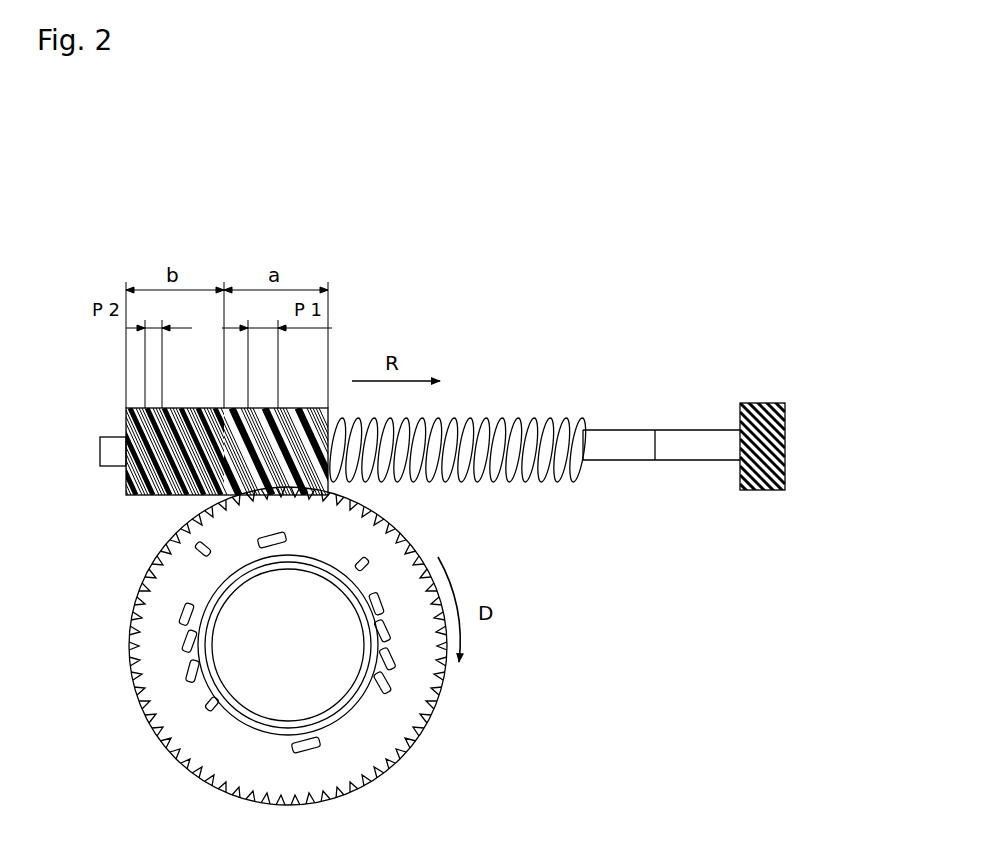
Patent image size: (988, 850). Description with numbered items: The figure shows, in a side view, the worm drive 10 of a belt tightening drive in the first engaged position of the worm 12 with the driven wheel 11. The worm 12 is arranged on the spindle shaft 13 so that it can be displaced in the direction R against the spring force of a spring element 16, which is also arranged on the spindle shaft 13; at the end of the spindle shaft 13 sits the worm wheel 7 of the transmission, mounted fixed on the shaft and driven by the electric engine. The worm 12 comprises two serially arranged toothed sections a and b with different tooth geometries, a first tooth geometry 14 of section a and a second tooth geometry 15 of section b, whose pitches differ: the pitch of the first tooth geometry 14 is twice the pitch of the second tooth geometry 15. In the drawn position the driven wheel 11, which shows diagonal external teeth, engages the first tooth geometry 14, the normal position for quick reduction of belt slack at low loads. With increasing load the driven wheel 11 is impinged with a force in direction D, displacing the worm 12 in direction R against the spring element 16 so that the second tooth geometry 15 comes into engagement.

The worm wheel 7 is at (766, 403).
The worm drive 10 is at (236, 646).
The driven wheel 11 is at (196, 710).
The worm 12 is at (205, 408).
The spindle shaft 13 is at (619, 429).
The first tooth geometry 14 is at (283, 408).
The second tooth geometry 15 is at (148, 410).
The spring element 16 is at (486, 417).